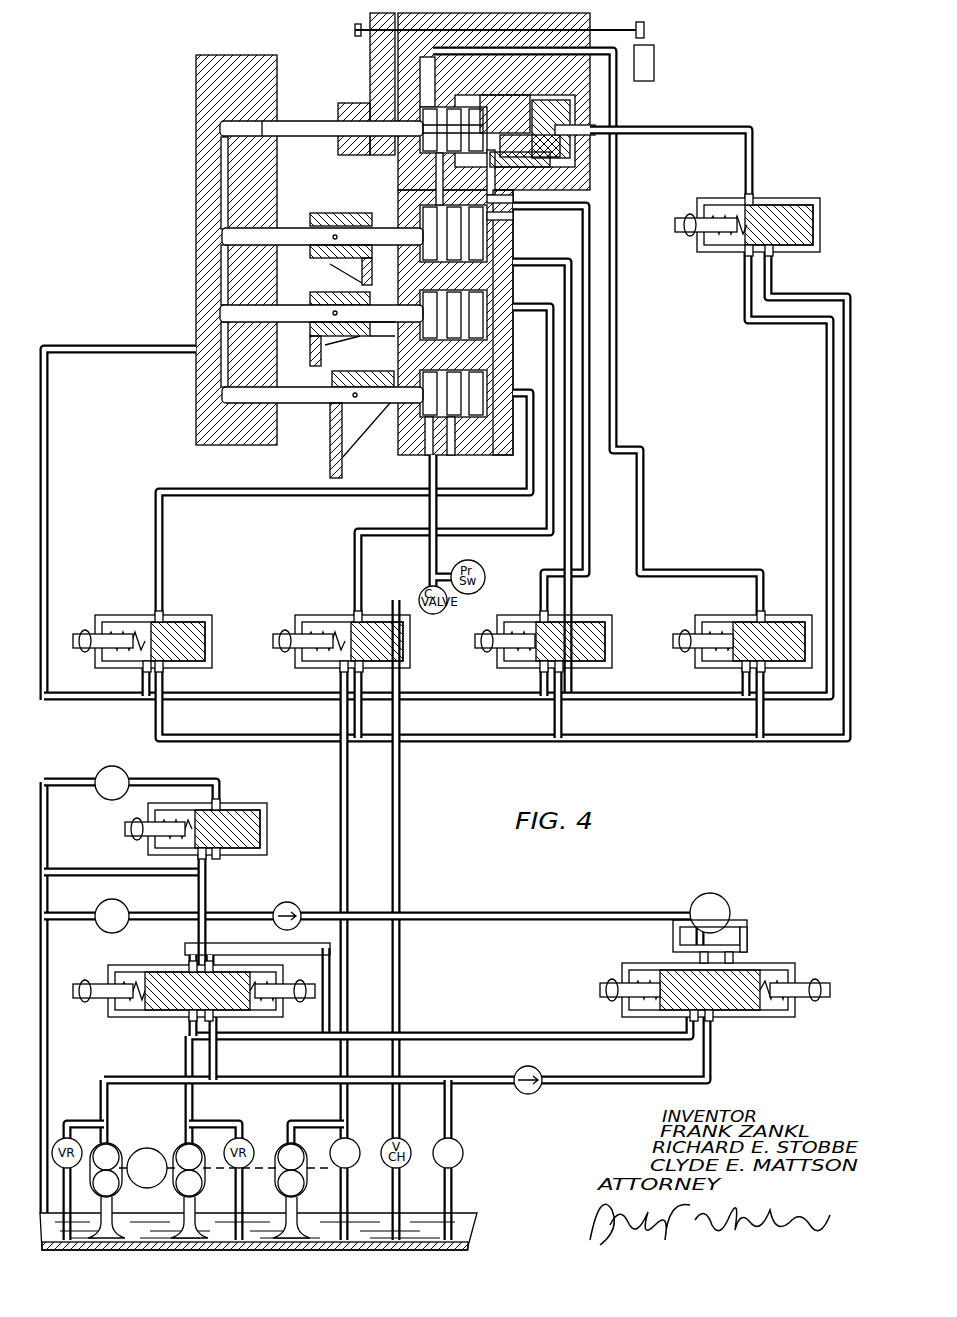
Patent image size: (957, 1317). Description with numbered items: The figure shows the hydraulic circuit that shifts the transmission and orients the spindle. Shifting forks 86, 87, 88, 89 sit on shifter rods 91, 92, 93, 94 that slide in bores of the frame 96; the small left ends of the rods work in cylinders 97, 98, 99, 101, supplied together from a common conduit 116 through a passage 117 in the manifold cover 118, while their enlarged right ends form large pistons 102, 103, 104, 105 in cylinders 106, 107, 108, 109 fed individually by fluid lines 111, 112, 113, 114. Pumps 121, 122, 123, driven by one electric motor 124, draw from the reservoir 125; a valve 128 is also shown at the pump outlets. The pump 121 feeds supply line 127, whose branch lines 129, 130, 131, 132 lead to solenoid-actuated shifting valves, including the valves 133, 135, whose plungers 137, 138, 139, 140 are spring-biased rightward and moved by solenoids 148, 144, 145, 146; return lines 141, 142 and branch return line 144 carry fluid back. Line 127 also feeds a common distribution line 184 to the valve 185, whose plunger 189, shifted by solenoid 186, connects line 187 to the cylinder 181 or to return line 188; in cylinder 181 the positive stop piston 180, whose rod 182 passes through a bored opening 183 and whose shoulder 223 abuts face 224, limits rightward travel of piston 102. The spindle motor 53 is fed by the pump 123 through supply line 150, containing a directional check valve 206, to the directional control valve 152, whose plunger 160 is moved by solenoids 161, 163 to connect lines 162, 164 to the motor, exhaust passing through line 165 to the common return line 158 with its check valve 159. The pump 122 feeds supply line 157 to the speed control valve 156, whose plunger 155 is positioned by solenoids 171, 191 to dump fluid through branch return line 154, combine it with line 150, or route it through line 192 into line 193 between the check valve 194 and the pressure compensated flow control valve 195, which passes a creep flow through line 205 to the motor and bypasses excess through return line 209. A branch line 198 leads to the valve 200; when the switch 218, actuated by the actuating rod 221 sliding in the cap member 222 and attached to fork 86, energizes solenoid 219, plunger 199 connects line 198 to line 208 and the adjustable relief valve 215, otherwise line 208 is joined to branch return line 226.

The spindle motor 53 is at (702, 896).
The shifting fork 86 is at (370, 157).
The shifting fork 87 is at (350, 276).
The shifting fork 88 is at (318, 356).
The shifting fork 89 is at (365, 434).
The shifter rod 91 is at (330, 127).
The shifter rod 92 is at (312, 222).
The shifter rod 93 is at (305, 306).
The shifter rod 94 is at (338, 394).
The frame 96 is at (518, 455).
The cylinder 97 is at (222, 128).
The cylinder 98 is at (222, 237).
The cylinder 99 is at (222, 311).
The cylinder 101 is at (228, 395).
The large diameter piston 102 is at (440, 135).
The large diameter piston 103 is at (495, 284).
The large diameter piston 104 is at (492, 349).
The large diameter piston 105 is at (480, 463).
The cylinder 106 is at (508, 196).
The cylinder 107 is at (510, 218).
The cylinder 108 is at (392, 348).
The cylinder 109 is at (418, 456).
The fluid line 111 is at (617, 214).
The fluid line 112 is at (568, 258).
The fluid line 113 is at (548, 333).
The fluid line 114 is at (512, 496).
The common conduit 116 is at (82, 352).
The passage 117 is at (205, 358).
The manifold cover 118 is at (240, 445).
The pump 121 is at (294, 1153).
The pump 122 is at (188, 1153).
The pump 123 is at (109, 1153).
The electric motor 124 is at (152, 1181).
The reservoir 125 is at (476, 1213).
The supply line 127 is at (340, 820).
The relief valve 128 is at (348, 1143).
The branch supply line 129 is at (740, 700).
The branch line 130 is at (540, 700).
The branch line 131 is at (340, 700).
The branch line 132 is at (128, 700).
The solenoid actuated control valve 133 is at (728, 628).
The solenoid actuated valve 135 is at (332, 630).
The valve plunger 137 is at (785, 662).
The valve plunger 138 is at (598, 628).
The valve plunger 139 is at (398, 623).
The valve plunger 140 is at (200, 664).
The return line 141 is at (520, 740).
The return line 142 is at (400, 794).
The branch return line 144 is at (480, 638).
The solenoid 145 is at (278, 633).
The solenoid 146 is at (85, 628).
The solenoid 148 is at (672, 633).
The supply line 150 is at (465, 1080).
The directional flow control valve 152 is at (730, 958).
The branch return line 154 is at (300, 1040).
The valve plunger 155 is at (175, 1024).
The speed control valve 156 is at (220, 1003).
The fluid supply line 157 is at (193, 1064).
The common return line 158 is at (450, 1117).
The check valve 159 is at (463, 1156).
The valve plunger 160 is at (765, 1014).
The solenoid 161 is at (210, 948).
The line 162 is at (750, 938).
The solenoid 163 is at (815, 983).
The line 164 is at (676, 941).
The return line 165 is at (632, 1038).
The solenoid 171 is at (310, 976).
The positive stop piston 180 is at (560, 120).
The cylinder 181 is at (595, 128).
The rod portion 182 is at (490, 170).
The bored opening 183 is at (565, 145).
The common distribution line 184 is at (828, 348).
The solenoid operated control valve 185 is at (523, 365).
The solenoid 186 is at (685, 220).
The line 187 is at (740, 126).
The return line 188 is at (850, 298).
The valve plunger 189 is at (795, 208).
The solenoid 191 is at (95, 988).
The line 192 is at (200, 933).
The line 193 is at (258, 911).
The check valve 194 is at (283, 901).
The pressure compensated flow control valve 195 is at (124, 904).
The branch line 198 is at (208, 883).
The valve plunger 199 is at (262, 806).
The solenoid operated valve 200 is at (196, 811).
The line 205 is at (478, 915).
The directional check valve 206 is at (540, 1087).
The line 208 is at (173, 781).
The return line 209 is at (62, 904).
The adjustable pressure relief valve 215 is at (122, 770).
The switch 218 is at (652, 64).
The solenoid 219 is at (130, 828).
The actuating rod 221 is at (644, 26).
The transmission frame cap member 222 is at (362, 31).
The shoulder 223 is at (520, 170).
The face 224 is at (520, 118).
The branch return line 226 is at (118, 871).